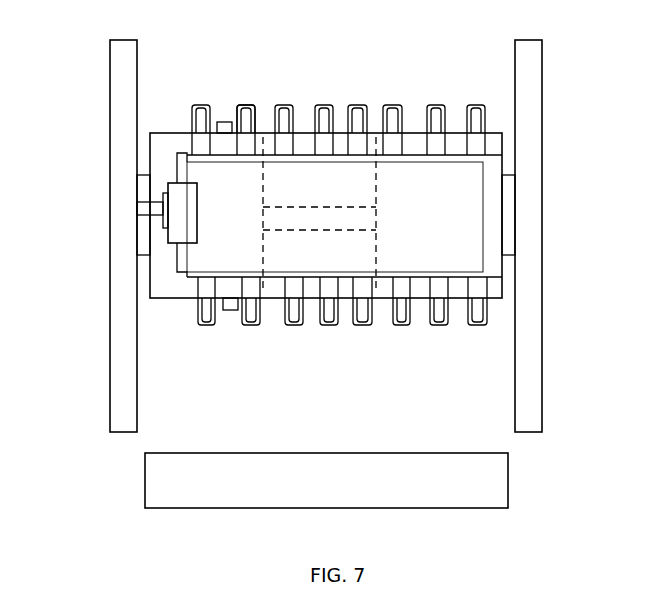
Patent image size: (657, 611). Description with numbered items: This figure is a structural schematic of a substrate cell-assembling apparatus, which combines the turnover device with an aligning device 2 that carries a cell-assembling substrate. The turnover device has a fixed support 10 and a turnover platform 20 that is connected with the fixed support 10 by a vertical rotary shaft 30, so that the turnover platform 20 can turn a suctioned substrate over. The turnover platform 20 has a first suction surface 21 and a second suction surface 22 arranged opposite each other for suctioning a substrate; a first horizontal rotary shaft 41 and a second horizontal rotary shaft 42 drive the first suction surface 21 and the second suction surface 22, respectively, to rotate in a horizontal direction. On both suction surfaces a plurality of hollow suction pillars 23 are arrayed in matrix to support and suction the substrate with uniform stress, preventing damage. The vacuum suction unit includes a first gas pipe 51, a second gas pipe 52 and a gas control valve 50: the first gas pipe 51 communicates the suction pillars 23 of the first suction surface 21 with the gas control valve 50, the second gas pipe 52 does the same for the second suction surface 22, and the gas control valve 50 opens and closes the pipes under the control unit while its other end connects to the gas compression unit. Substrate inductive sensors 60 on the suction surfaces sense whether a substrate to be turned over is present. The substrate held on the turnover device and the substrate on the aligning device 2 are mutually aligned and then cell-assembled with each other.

The aligning device 2 is at (492, 477).
The fixed support 10 is at (122, 152).
The turnover platform 20 is at (443, 226).
The first suction surface 21 is at (338, 82).
The second suction surface 22 is at (420, 300).
The suction pillars 23 is at (247, 106).
The vertical rotary shaft 30 is at (147, 243).
The first horizontal rotary shaft 41 is at (362, 187).
The second horizontal rotary shaft 42 is at (300, 250).
The gas control valve 50 is at (180, 227).
The first gas pipe 51 is at (187, 160).
The second gas pipe 52 is at (190, 275).
The substrate inductive sensor 60 is at (225, 122).